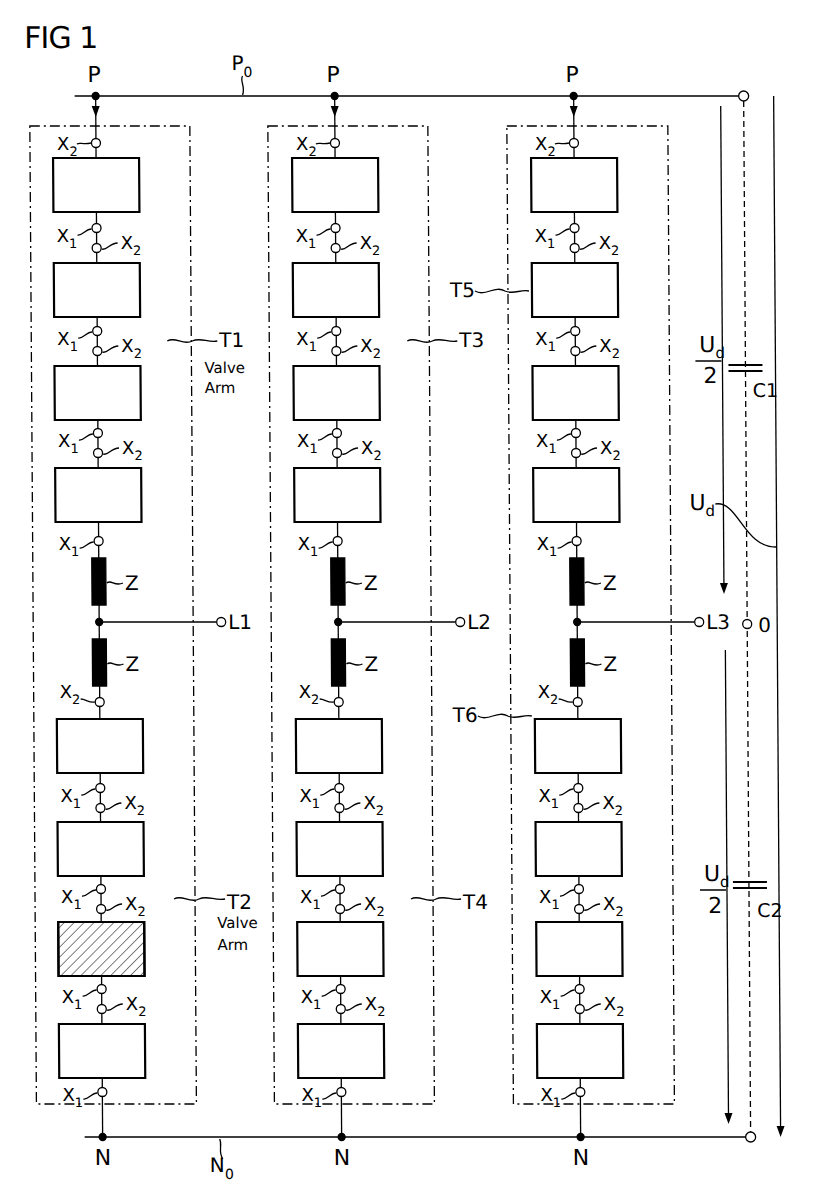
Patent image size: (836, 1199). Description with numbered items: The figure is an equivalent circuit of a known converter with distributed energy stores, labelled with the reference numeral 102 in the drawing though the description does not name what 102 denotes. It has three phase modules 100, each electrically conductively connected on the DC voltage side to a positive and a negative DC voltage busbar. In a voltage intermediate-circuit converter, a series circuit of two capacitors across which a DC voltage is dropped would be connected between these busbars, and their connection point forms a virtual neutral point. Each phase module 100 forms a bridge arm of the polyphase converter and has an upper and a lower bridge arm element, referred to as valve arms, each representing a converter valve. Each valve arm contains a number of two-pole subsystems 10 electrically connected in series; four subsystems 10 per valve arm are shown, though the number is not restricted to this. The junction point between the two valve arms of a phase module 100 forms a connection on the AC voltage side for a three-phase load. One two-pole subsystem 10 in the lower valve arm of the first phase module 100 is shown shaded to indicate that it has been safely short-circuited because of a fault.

The two-pole subsystem 10 is at (139, 185).
The phase module 100 is at (189, 240).
The DC voltage intermediate circuit 102 is at (450, 92).